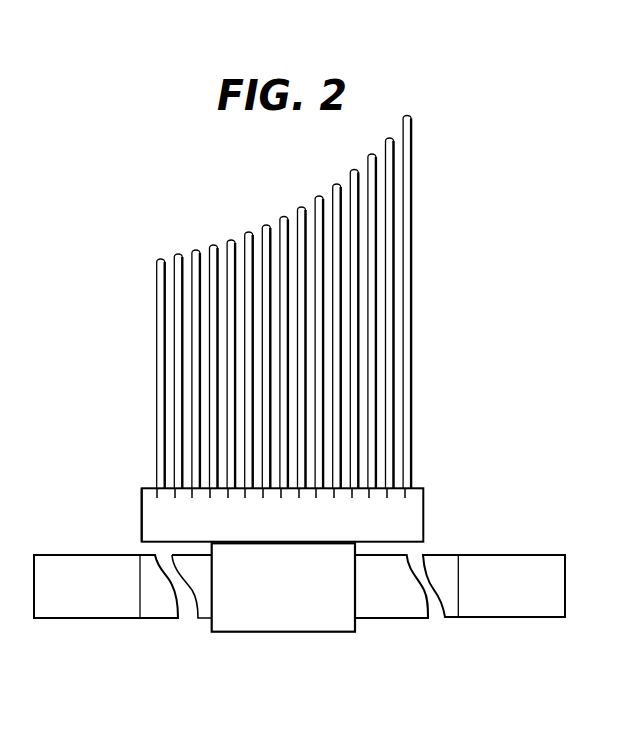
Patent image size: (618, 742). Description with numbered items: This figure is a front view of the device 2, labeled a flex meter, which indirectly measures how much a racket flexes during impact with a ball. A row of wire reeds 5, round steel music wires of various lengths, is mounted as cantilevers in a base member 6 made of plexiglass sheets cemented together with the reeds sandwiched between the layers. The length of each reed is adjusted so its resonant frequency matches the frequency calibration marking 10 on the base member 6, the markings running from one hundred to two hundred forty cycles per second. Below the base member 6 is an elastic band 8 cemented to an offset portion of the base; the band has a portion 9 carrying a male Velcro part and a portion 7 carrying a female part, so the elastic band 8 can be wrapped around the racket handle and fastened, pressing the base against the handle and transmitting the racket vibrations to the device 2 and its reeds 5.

The device 2 is at (277, 632).
The wire reeds 5 is at (412, 301).
The base member 6 is at (423, 510).
The female Velcro portion 7 is at (100, 562).
The elastic band 8 is at (157, 618).
The male Velcro portion 9 is at (537, 563).
The frequency calibration marking 10 is at (142, 508).